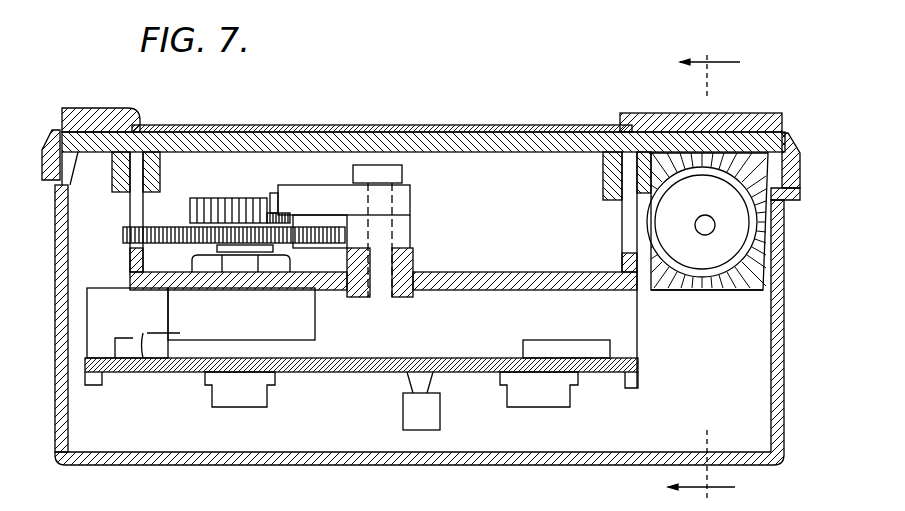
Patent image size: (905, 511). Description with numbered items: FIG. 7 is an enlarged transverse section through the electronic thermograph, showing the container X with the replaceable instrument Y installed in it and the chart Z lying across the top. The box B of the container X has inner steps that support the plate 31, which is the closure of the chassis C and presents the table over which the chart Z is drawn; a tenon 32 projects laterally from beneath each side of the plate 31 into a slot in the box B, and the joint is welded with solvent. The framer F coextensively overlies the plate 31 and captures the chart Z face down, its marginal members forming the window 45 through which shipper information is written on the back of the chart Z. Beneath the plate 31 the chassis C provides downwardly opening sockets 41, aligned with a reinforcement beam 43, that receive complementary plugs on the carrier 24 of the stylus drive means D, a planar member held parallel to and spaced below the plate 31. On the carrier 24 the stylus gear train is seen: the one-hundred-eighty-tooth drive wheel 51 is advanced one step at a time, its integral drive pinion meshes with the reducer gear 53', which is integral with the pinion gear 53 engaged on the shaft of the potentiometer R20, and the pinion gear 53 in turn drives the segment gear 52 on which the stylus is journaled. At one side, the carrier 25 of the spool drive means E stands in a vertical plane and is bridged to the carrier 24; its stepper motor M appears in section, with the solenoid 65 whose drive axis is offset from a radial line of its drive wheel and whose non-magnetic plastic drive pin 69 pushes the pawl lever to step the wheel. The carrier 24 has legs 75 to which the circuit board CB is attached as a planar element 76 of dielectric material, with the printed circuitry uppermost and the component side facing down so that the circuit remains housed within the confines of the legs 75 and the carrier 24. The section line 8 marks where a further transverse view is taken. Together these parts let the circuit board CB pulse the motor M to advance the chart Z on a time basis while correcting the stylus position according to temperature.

The box B is at (52, 255).
The container X is at (52, 348).
The window 45 is at (142, 123).
The chart Z is at (437, 125).
The plate 31 is at (510, 140).
The framer F is at (622, 110).
The tenon 32 is at (48, 185).
The socket 41 is at (136, 170).
The reinforcement beam 43 is at (142, 256).
The chassis C is at (518, 156).
The carrier 24 is at (525, 268).
The drive wheel 51 is at (405, 171).
The pinion gear 53 is at (225, 197).
The segment gear 52 is at (276, 198).
The reducer gear 53' is at (234, 221).
The stylus drive means D is at (258, 170).
The spool drive means E is at (728, 298).
The carrier 25 is at (676, 296).
The stepper motor M is at (742, 242).
The solenoid 65 is at (733, 250).
The drive pin 69 is at (703, 233).
The potentiometer R20 is at (201, 323).
The instrument Y is at (84, 363).
The circuit board CB is at (352, 376).
The planar element 76 is at (386, 333).
The leg 75 is at (92, 387).
The section line 8- 8 is at (713, 276).